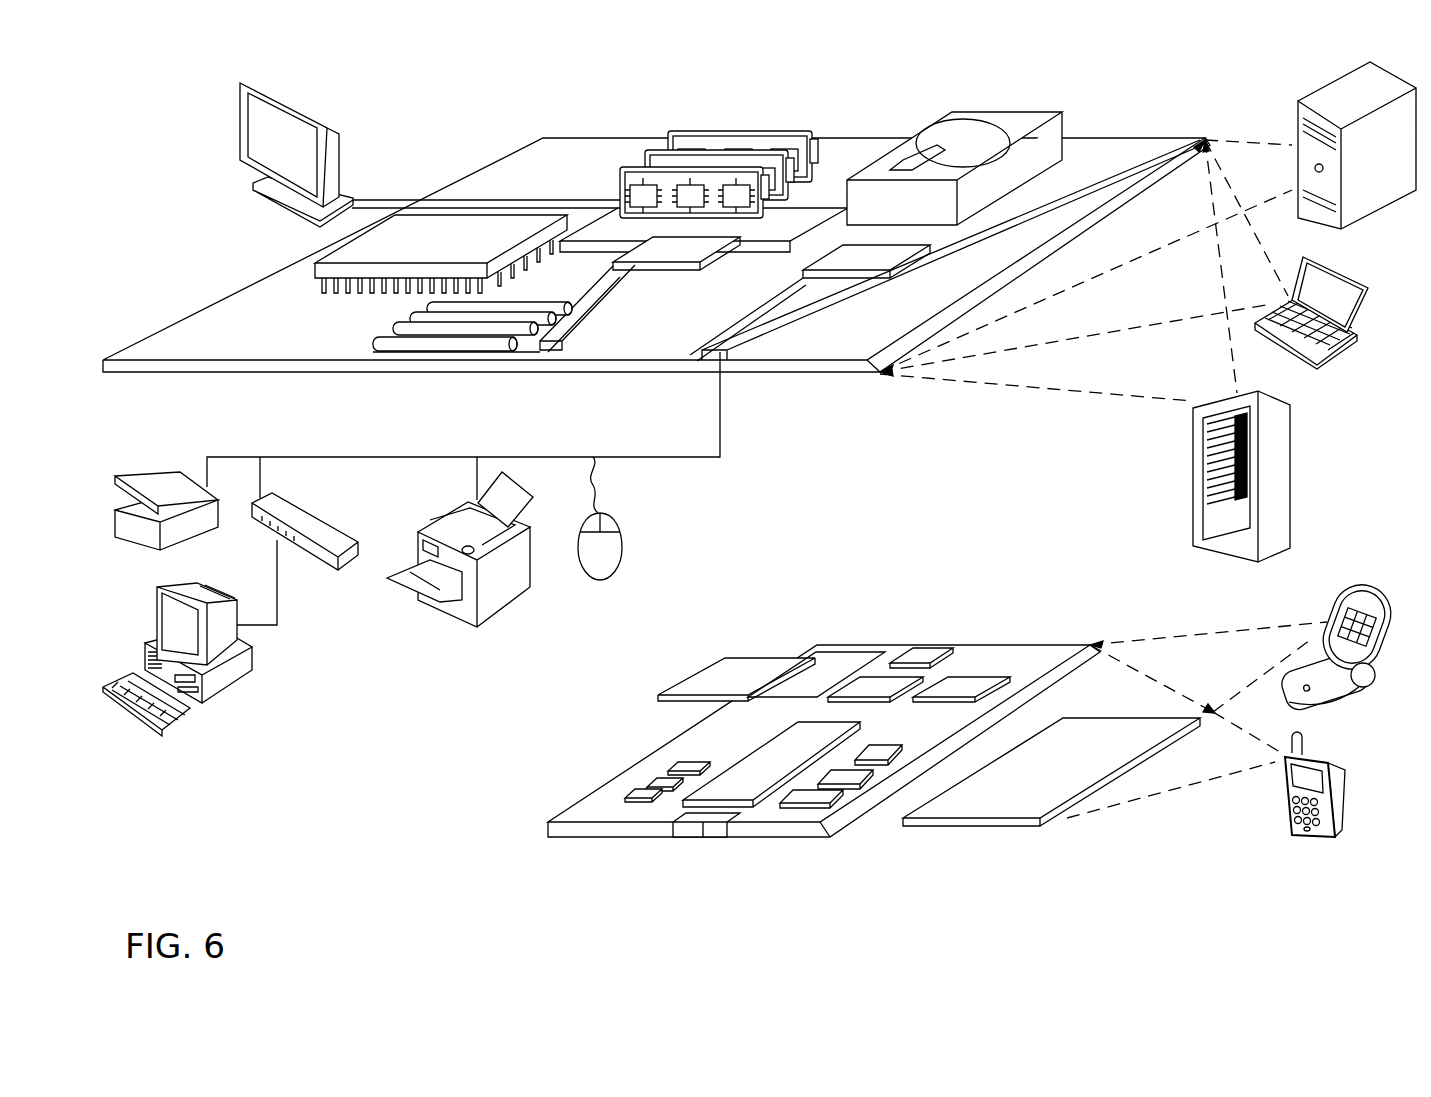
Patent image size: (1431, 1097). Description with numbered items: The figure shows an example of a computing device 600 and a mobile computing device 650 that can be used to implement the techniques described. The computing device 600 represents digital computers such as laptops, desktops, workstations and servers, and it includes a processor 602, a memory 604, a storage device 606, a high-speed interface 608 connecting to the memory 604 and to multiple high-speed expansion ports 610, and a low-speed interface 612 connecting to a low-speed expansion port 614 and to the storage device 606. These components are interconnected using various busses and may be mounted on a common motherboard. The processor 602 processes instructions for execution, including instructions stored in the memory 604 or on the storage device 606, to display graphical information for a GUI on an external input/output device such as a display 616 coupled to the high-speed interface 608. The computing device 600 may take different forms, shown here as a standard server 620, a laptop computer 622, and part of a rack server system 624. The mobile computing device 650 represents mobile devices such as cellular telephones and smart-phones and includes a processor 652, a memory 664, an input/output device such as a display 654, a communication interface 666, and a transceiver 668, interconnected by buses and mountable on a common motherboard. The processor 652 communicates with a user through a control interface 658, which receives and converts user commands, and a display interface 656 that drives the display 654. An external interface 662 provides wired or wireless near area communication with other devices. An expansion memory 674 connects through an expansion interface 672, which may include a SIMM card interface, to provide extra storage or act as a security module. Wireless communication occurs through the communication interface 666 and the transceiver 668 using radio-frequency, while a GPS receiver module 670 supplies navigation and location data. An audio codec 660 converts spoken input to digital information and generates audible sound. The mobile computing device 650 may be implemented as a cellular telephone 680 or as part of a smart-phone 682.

The computing device 600 is at (460, 106).
The processor 602 is at (317, 267).
The memory 604 is at (688, 131).
The storage device 606 is at (950, 113).
The high-speed interface 608 is at (650, 250).
The high-speed expansion ports 610 is at (407, 330).
The low-speed interface 612 is at (841, 256).
The low-speed expansion port 614 is at (727, 362).
The display 616 is at (243, 83).
The standard server 620 is at (1297, 125).
The laptop computer 622 is at (1364, 292).
The rack server system 624 is at (1192, 505).
The mobile computing device 650 is at (520, 834).
The processor 652 is at (743, 790).
The display 654 is at (1003, 812).
The display interface 656 is at (820, 808).
The control interface 658 is at (865, 788).
The audio codec 660 is at (885, 750).
The external interface 662 is at (703, 830).
The memory 664 is at (650, 778).
The communication interface 666 is at (877, 688).
The transceiver 668 is at (962, 687).
The GPS receiver module 670 is at (932, 648).
The expansion interface 672 is at (800, 662).
The expansion memory 674 is at (717, 663).
The cellular telephone 680 is at (1347, 594).
The smart-phone 682 is at (1283, 795).